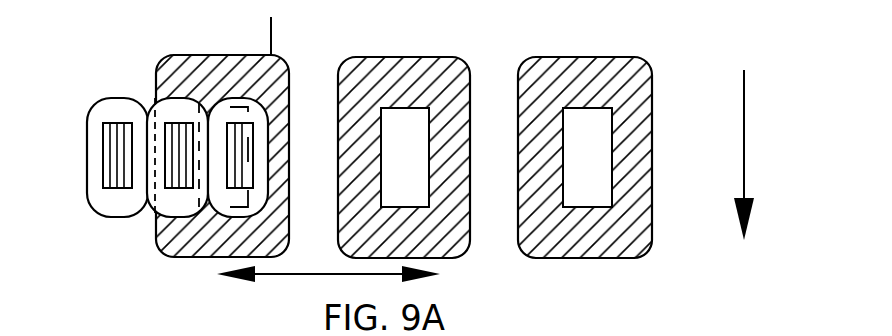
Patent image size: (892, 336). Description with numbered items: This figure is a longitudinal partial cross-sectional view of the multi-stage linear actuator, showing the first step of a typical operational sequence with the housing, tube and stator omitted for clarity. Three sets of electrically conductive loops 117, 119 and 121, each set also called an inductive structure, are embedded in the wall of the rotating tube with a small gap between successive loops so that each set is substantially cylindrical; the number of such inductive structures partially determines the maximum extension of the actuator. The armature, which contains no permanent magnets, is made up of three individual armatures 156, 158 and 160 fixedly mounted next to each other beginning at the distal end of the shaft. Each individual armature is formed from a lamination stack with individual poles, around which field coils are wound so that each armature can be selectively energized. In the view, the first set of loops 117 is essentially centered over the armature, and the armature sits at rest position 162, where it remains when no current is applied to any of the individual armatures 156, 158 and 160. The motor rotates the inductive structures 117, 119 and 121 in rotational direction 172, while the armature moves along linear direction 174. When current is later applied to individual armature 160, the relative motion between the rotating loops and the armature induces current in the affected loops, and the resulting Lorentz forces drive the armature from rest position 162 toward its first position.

The electrically conductive loops 117 is at (156, 240).
The electrically conductive loops 119 is at (460, 252).
The electrically conductive loops 121 is at (645, 250).
The individual armature 156 is at (85, 165).
The individual armature 158 is at (148, 110).
The individual armature 160 is at (293, 112).
The rest position 162 is at (270, 52).
The rotational direction 172 is at (744, 130).
The linear direction 174 is at (302, 276).